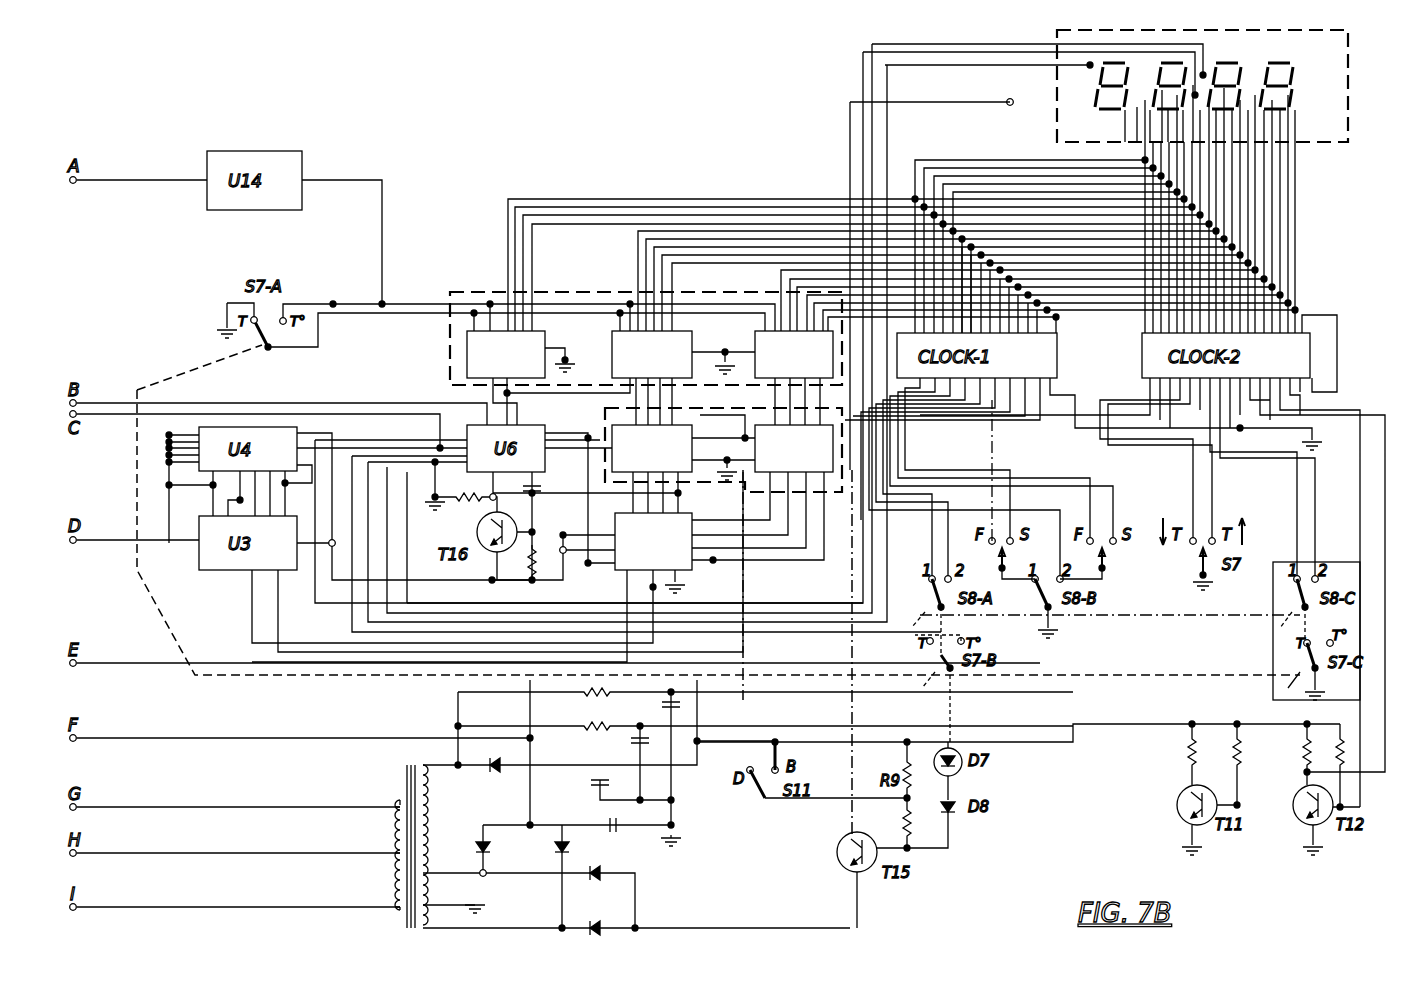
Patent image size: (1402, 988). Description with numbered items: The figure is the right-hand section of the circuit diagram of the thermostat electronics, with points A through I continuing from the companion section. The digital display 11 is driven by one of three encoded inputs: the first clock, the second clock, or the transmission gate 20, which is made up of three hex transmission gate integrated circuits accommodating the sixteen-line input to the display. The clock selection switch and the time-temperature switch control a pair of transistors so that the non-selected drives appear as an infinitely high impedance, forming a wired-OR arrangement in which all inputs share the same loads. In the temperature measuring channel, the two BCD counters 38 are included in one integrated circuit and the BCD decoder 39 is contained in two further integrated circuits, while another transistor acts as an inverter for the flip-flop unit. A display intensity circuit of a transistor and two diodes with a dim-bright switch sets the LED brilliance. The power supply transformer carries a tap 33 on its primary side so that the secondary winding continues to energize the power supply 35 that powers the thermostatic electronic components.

The digital display 11 is at (1350, 88).
The transmission gate 20 is at (470, 290).
The tap 33 is at (355, 853).
The power supply 35 is at (670, 862).
The BCD counters 38 is at (688, 560).
The BCD decoder 39 is at (832, 492).